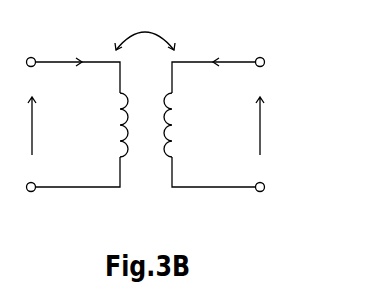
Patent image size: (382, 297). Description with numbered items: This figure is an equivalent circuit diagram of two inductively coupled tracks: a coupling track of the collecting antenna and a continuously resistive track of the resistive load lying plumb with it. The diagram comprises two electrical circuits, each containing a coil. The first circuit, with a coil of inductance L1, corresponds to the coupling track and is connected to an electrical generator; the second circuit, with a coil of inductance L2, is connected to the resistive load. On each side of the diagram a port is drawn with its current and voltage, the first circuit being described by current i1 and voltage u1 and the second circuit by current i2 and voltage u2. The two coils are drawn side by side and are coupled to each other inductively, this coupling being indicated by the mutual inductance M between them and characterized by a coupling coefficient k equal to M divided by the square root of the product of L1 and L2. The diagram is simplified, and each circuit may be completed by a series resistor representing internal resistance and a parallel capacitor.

The inductance of first coil L1 is at (107, 125).
The inductance of second coil L2 is at (183, 125).
The mutual inductance M is at (145, 30).
The primary current i1 is at (68, 50).
The secondary current i2 is at (219, 50).
The primary voltage u1 is at (22, 126).
The secondary voltage u2 is at (269, 126).